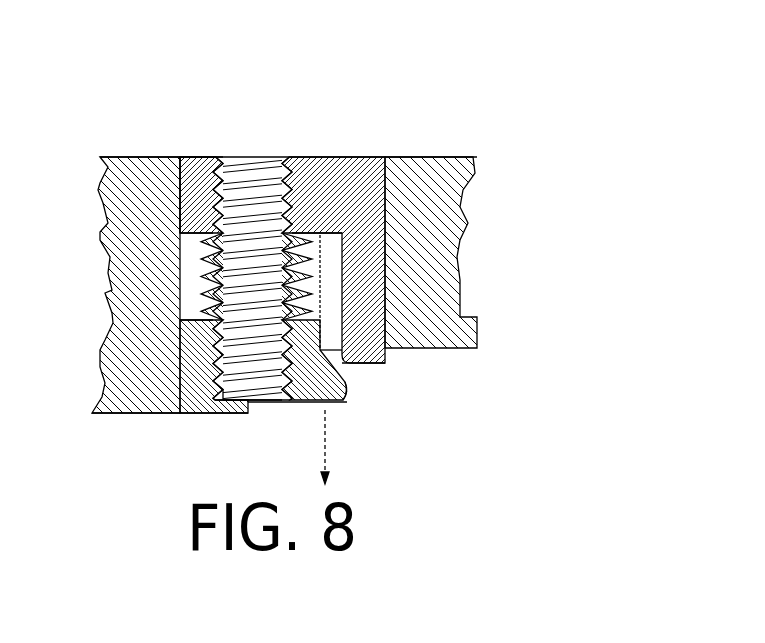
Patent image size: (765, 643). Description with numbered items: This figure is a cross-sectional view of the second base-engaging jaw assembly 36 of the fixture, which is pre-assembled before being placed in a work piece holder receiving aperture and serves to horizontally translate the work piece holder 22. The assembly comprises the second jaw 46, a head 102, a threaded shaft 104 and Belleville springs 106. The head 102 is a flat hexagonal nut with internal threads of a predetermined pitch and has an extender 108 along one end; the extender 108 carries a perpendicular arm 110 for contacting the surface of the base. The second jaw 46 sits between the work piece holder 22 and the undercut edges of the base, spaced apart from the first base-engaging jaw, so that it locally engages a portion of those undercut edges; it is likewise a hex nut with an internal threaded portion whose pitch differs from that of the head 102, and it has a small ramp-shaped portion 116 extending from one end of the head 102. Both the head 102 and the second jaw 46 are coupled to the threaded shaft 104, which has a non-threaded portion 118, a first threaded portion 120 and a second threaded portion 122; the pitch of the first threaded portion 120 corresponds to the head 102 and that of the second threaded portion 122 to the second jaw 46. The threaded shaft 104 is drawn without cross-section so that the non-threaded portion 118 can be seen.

The work piece holder 22 is at (442, 253).
The second base-engaging jaw assembly 36 is at (227, 132).
The second jaw 46 is at (200, 388).
The head 102 is at (329, 165).
The threaded shaft 104 is at (251, 162).
The Belleville springs 106 is at (198, 268).
The extender 108 is at (350, 173).
The perpendicular arm 110 is at (380, 365).
The ramp-shaped portion 116 is at (346, 381).
The non-threaded portion 118 is at (196, 255).
The first threaded portion 120 is at (191, 157).
The second threaded portion 122 is at (253, 357).